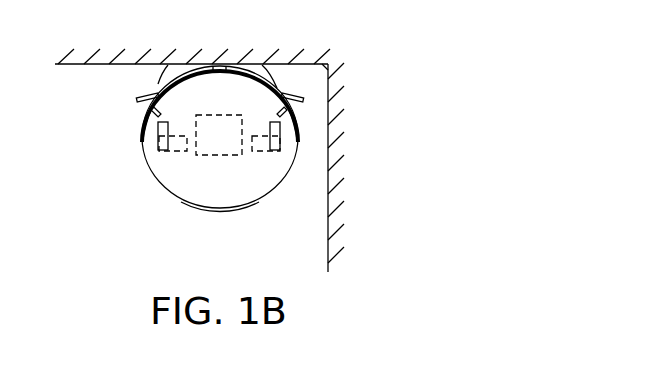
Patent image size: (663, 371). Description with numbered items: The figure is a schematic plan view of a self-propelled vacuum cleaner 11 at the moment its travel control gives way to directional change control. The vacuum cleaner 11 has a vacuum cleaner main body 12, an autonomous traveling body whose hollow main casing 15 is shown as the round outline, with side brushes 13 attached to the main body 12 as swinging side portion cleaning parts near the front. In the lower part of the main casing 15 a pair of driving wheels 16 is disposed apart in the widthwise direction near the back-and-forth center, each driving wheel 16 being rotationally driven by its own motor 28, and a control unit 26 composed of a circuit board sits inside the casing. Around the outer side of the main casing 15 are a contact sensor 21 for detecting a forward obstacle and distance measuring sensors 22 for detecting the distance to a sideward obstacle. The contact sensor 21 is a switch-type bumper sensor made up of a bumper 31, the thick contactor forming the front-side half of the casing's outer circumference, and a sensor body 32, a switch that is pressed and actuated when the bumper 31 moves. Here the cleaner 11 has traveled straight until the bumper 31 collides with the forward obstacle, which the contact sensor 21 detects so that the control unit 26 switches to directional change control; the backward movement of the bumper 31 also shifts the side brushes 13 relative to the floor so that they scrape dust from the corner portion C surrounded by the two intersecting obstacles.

The vacuum cleaner 11 is at (189, 116).
The vacuum cleaner main body 12 is at (162, 197).
The side brush 13 is at (157, 68).
The main casing 15 is at (243, 209).
The driving wheel 16 is at (158, 137).
The contact sensor 21 is at (186, 67).
The distance measuring sensor 22 is at (148, 108).
The control unit 26 is at (204, 157).
The motor 28 is at (178, 153).
The bumper 31 is at (142, 133).
The sensor body 32 is at (229, 64).
The corner portion C is at (320, 82).